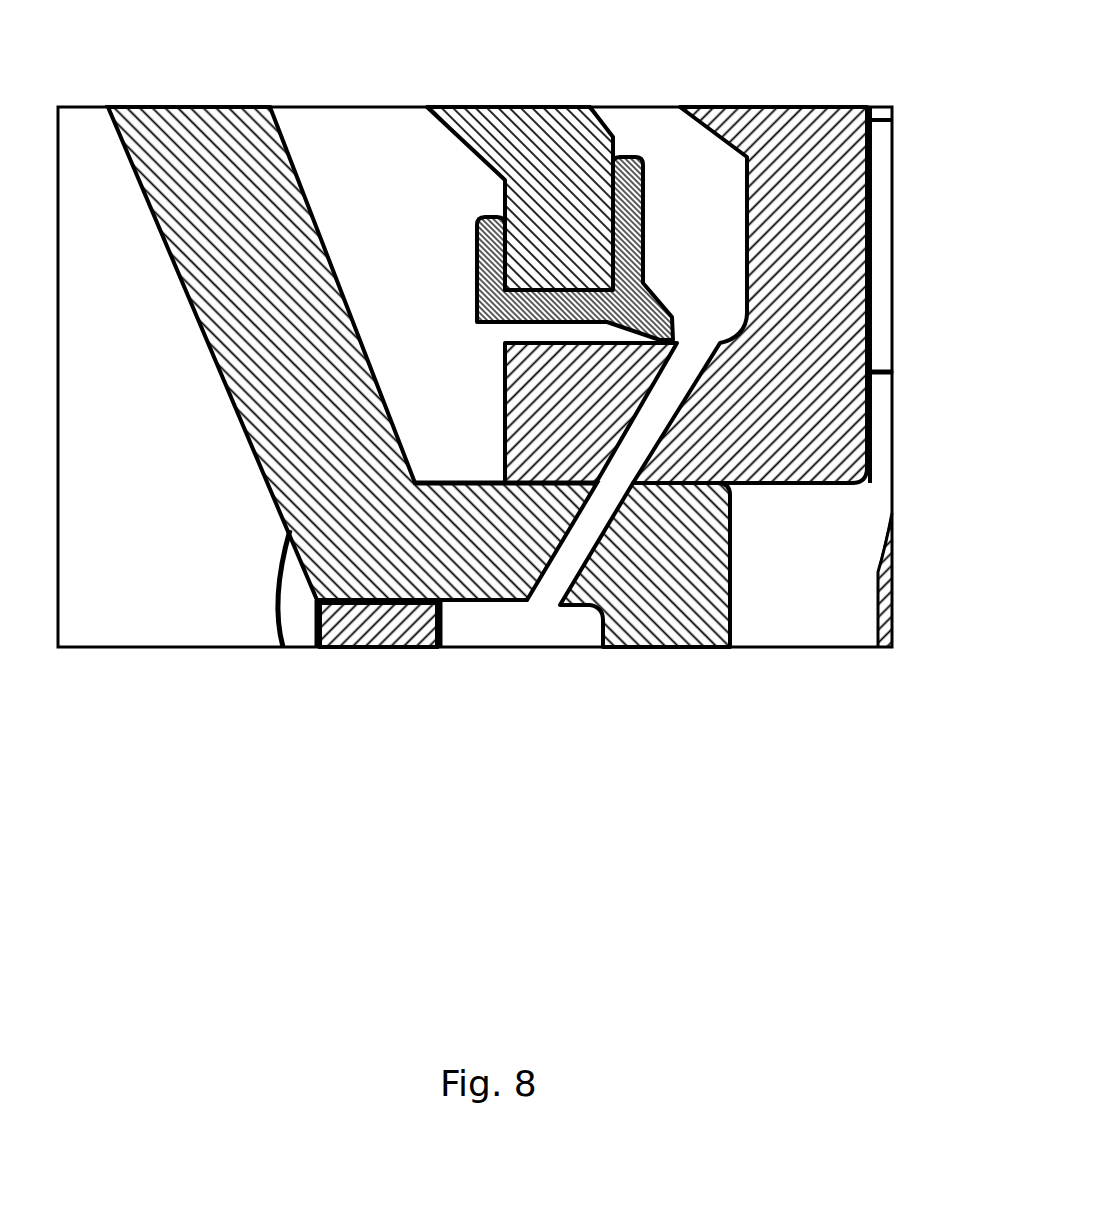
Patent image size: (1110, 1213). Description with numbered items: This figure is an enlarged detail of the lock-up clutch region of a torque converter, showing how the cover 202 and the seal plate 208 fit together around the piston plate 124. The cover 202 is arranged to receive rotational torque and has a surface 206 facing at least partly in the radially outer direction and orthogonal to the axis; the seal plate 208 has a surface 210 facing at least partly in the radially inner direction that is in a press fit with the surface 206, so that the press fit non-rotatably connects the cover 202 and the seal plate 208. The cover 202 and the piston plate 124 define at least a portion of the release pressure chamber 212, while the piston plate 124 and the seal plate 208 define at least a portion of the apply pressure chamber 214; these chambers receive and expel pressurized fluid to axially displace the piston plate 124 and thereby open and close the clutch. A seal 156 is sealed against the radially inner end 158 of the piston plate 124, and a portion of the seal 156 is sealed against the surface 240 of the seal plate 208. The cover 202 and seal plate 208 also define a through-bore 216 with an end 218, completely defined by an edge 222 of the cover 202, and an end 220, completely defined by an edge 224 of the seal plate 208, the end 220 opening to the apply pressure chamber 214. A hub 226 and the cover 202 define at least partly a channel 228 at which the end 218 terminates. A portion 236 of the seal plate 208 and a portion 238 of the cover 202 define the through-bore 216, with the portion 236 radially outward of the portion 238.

The piston plate 124 is at (607, 128).
The seal 156 is at (650, 237).
The radially inner end 158 is at (556, 340).
The cover 202 is at (150, 228).
The surface 206 is at (452, 478).
The seal plate 208 is at (875, 178).
The surface 210 is at (553, 477).
The release pressure chamber 212 is at (365, 135).
The apply pressure chamber 214 is at (658, 133).
The through-bore 216 is at (530, 565).
The end 218 is at (547, 600).
The end 220 is at (693, 347).
The edge 222 is at (565, 612).
The edge 224 is at (723, 352).
The hub 226 is at (353, 628).
The channel 228 is at (470, 621).
The portion 236 is at (485, 283).
The portion 238 is at (615, 545).
The surface 240 is at (583, 277).